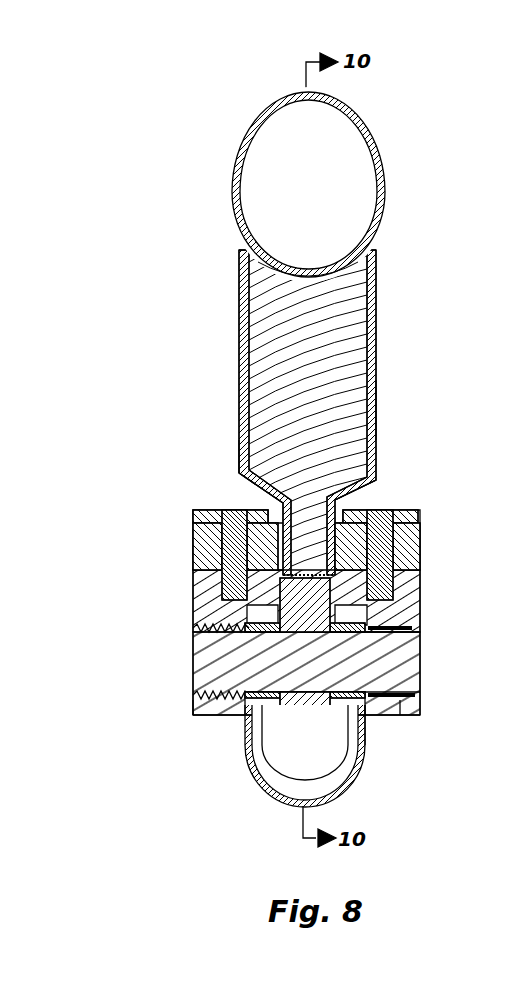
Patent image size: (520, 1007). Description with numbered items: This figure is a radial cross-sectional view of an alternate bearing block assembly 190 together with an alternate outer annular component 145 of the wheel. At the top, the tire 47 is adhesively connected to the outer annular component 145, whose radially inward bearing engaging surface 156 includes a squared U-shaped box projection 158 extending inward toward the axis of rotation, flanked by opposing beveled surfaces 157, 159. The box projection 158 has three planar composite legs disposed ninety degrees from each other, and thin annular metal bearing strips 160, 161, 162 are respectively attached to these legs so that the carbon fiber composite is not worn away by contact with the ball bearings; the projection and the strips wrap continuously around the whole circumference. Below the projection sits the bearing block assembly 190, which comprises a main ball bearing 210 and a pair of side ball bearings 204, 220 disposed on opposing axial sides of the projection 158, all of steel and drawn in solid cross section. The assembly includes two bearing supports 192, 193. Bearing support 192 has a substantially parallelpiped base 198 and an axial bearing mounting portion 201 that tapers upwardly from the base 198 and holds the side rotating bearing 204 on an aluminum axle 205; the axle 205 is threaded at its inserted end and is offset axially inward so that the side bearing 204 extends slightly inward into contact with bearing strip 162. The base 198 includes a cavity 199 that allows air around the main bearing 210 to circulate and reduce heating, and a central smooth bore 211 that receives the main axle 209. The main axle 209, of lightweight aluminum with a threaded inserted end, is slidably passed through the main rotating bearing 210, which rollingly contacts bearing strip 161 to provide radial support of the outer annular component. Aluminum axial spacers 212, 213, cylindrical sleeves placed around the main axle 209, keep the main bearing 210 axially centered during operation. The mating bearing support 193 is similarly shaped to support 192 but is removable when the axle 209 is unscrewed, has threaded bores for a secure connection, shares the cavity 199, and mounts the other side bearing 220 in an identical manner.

The tire 47 is at (362, 176).
The outer annular component 145 is at (392, 308).
The squared U-shaped box projection 158 is at (283, 503).
The beveled surface 157 is at (246, 472).
The bearing strip 160 is at (264, 498).
The beveled surface 159 is at (376, 408).
The radially inward bearing engaging surface 156 is at (366, 496).
The bearing block assembly 190 is at (158, 674).
The side ball bearing 220 is at (192, 548).
The axial bearing mounting portion 201 is at (420, 512).
The side rotating bearing 204 is at (422, 542).
The axle 205 is at (395, 510).
The bearing strip 161 is at (240, 590).
The bearing strip 162 is at (384, 598).
The parallelpiped base 198 is at (398, 610).
The cavity 199 is at (397, 655).
The main axle 209 is at (398, 680).
The main rotating bearing 210 is at (306, 750).
The bearing support 192 is at (425, 718).
The bearing support 193 is at (190, 719).
The axial spacer 212 is at (250, 745).
The axial spacer 213 is at (357, 748).
The central smooth bore 211 is at (384, 715).